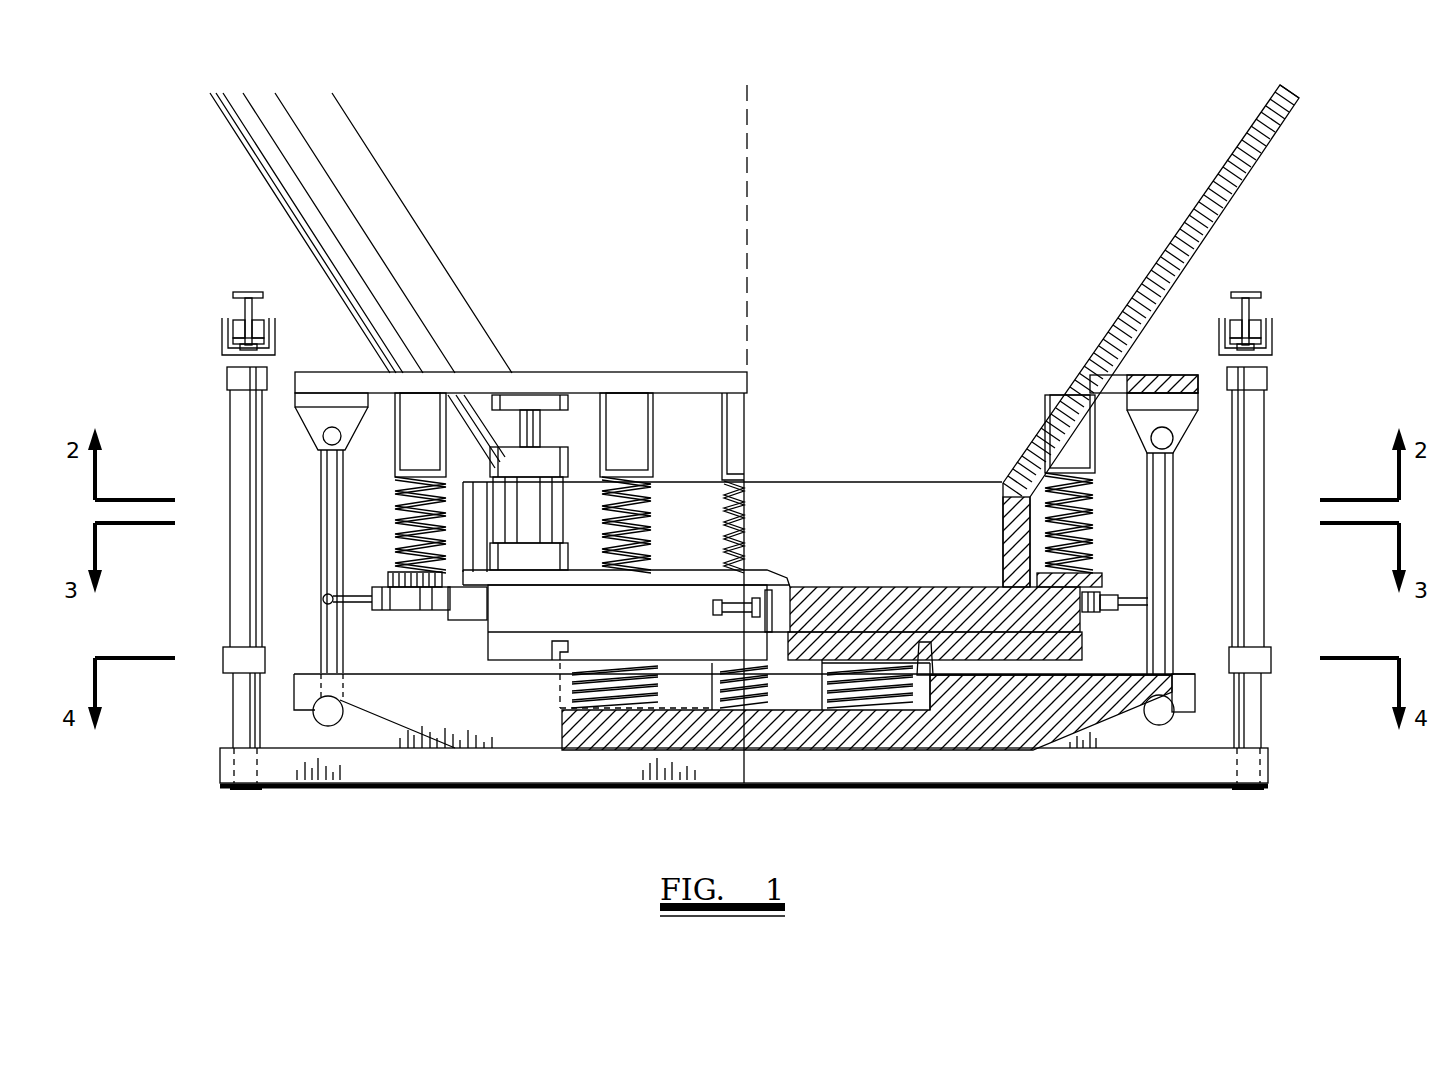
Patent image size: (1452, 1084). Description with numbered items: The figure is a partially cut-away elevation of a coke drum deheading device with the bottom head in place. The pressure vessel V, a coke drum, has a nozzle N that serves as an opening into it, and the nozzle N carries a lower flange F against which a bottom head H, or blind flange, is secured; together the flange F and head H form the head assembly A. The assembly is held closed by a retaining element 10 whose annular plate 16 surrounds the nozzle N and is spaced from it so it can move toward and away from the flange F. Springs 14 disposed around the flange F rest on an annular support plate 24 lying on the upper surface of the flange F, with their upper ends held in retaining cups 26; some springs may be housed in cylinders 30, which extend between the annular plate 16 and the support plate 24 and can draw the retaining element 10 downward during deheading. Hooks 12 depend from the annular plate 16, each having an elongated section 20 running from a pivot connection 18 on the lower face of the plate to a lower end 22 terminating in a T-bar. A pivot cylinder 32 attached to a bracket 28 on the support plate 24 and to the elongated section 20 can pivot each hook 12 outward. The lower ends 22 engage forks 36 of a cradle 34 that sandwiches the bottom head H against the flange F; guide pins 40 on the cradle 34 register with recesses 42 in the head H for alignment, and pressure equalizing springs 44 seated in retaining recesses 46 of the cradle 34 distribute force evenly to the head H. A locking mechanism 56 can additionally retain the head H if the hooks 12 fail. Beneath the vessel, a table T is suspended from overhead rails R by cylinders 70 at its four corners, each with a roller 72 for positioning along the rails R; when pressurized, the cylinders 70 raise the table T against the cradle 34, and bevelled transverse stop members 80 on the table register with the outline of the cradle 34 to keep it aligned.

The retaining element 10 is at (670, 370).
The hooks 12 is at (310, 551).
The springs 14 is at (650, 523).
The annular plate 16 is at (535, 387).
The pivot connection 18 is at (327, 436).
The elongated section 20 is at (322, 575).
The lower end 22 is at (327, 712).
The annular support plate 24 is at (583, 582).
The retaining cups 26 is at (419, 418).
The bracket 28 is at (482, 600).
The cylinders 30 is at (531, 458).
The pivot cylinder 32 is at (383, 607).
The cradle 34 is at (835, 730).
The fork 36 is at (1187, 693).
The guide pins 40 is at (562, 665).
The recesses 42 is at (567, 651).
The pressure equalizing springs 44 is at (632, 695).
The retaining recesses 46 is at (742, 703).
The locking mechanism 56 is at (800, 605).
The cylinders 70 is at (1250, 432).
The roller 72 is at (1272, 320).
The transverse stop members 80 is at (1088, 740).
The head assembly A is at (372, 641).
The lower flange F is at (680, 610).
The bottom head H is at (982, 648).
The nozzle N is at (1014, 528).
The overhead rails R is at (1248, 292).
The table T is at (403, 768).
The pressure vessel V is at (1245, 170).